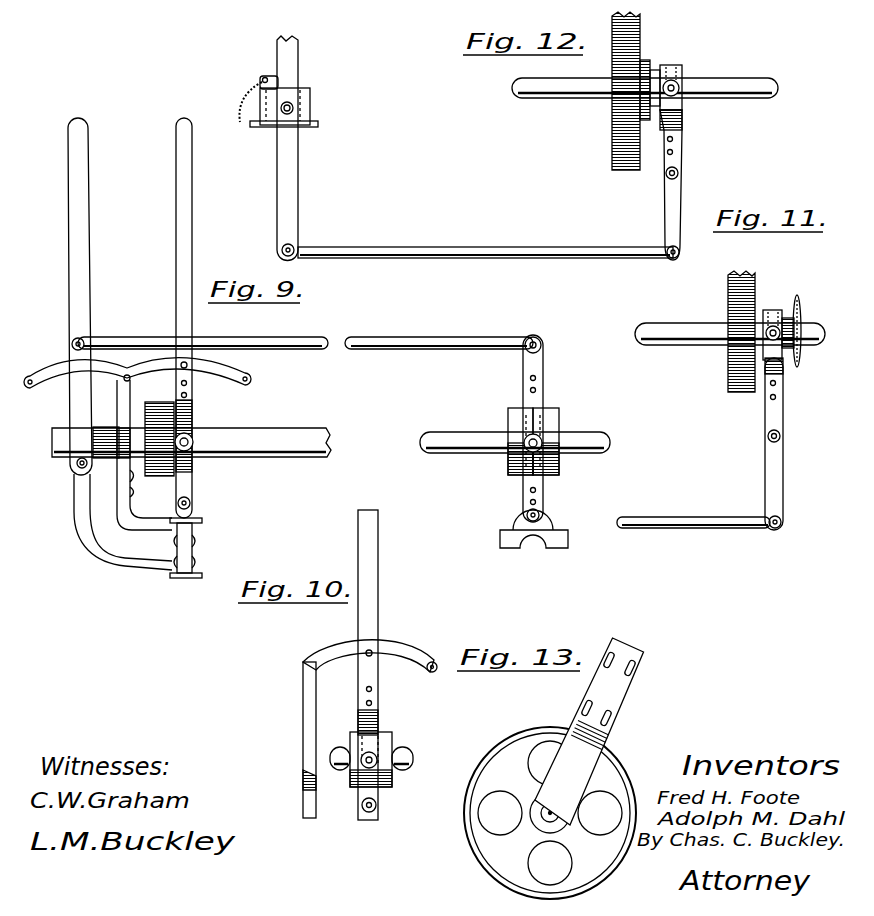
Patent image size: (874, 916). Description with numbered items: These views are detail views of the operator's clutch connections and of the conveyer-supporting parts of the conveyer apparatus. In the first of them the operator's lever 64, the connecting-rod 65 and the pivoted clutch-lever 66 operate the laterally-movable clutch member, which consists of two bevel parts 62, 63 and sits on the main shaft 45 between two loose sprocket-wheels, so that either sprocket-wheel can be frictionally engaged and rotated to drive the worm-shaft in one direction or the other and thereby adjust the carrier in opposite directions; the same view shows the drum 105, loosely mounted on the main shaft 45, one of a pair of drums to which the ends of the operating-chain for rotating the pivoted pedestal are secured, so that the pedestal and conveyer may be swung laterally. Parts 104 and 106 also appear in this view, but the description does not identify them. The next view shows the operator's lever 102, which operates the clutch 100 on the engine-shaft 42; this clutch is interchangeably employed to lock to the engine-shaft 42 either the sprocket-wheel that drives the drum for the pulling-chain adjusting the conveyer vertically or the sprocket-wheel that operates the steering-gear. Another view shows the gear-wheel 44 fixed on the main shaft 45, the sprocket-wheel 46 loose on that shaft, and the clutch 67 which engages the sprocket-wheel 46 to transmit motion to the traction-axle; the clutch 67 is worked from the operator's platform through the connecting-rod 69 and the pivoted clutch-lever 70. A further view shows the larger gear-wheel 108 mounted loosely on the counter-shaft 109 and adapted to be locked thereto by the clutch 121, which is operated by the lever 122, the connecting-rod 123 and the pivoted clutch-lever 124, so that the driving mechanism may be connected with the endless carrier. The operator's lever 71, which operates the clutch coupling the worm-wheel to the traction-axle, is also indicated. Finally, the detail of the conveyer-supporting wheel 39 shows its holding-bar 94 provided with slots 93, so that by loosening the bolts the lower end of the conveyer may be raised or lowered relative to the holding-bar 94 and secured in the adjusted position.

In FIG. 9, the lever 64 is at (84, 283).
In FIG. 9, the upright bar 106 is at (188, 292).
In FIG. 9, the connecting-rod 65 is at (283, 334).
In FIG. 9, the gear 104 is at (175, 404).
In FIG. 9, the drum 105 is at (229, 434).
In FIG. 9, the pivoted clutch-lever 66 is at (543, 376).
In FIG. 9, the bevel part 62 is at (514, 416).
In FIG. 9, the bevel part 63 is at (550, 416).
In FIG. 9, the main shaft 45 is at (455, 440).
In FIG. 11, the main shaft 45 is at (683, 328).
In FIG. 12, the operator's lever 71 is at (188, 7).
In FIG. 12, the lever 122 is at (285, 192).
In FIG. 12, the connecting-rod 123 is at (478, 247).
In FIG. 12, the gear-wheel 108 is at (613, 125).
In FIG. 12, the counter-shaft 109 is at (560, 87).
In FIG. 12, the clutch 121 is at (676, 78).
In FIG. 12, the pivoted clutch-lever 124 is at (676, 185).
In FIG. 11, the gear-wheel 44 is at (728, 357).
In FIG. 11, the clutch 67 is at (787, 305).
In FIG. 11, the sprocket-wheel 46 is at (802, 313).
In FIG. 11, the pivoted clutch-lever 70 is at (775, 467).
In FIG. 11, the connecting-rod 69 is at (692, 523).
In FIG. 10, the operator's lever 102 is at (374, 618).
In FIG. 10, the clutch 100 is at (380, 734).
In FIG. 10, the engine-shaft 42 is at (416, 758).
In FIG. 13, the supporting-wheel 39 is at (550, 813).
In FIG. 13, the slots 93 is at (640, 665).
In FIG. 13, the holding-bar 94 is at (608, 697).